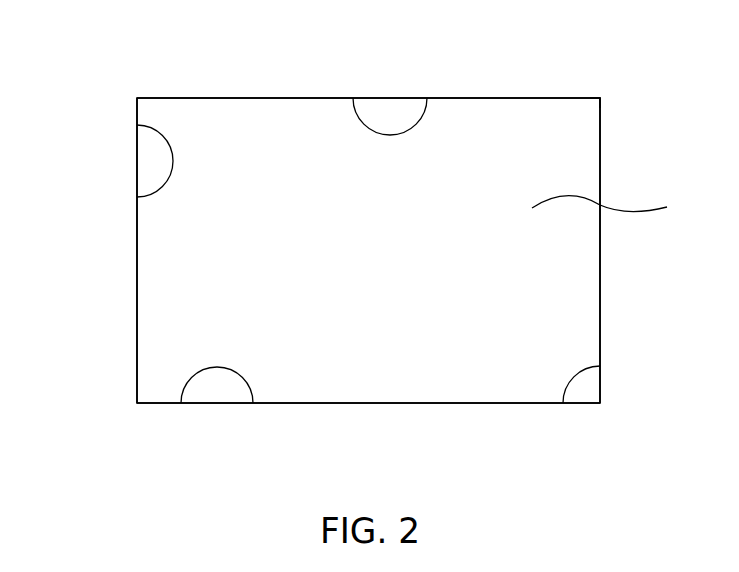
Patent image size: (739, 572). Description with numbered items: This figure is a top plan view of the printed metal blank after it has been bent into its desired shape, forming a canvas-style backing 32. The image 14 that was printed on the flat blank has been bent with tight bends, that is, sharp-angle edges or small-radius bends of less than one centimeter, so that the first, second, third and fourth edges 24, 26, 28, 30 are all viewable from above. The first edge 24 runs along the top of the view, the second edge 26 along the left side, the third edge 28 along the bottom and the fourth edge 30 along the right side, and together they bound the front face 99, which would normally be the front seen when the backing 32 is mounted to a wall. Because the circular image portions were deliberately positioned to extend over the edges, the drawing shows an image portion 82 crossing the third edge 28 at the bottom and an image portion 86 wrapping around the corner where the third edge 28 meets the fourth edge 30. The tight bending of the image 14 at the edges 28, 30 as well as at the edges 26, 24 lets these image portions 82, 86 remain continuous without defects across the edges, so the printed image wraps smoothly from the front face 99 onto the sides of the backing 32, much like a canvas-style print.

The image 14 is at (508, 112).
The first edge 24 is at (245, 97).
The second edge 26 is at (137, 262).
The third edge 28 is at (365, 403).
The fourth edge 30 is at (600, 263).
The canvas-style backing 32 is at (610, 94).
The image portion 82 is at (224, 393).
The image portion 86 is at (583, 387).
The front face 99 is at (614, 209).